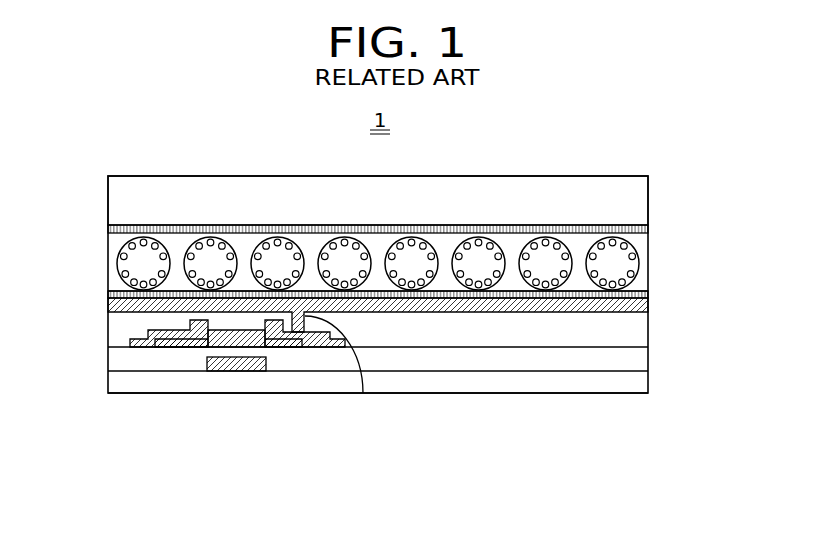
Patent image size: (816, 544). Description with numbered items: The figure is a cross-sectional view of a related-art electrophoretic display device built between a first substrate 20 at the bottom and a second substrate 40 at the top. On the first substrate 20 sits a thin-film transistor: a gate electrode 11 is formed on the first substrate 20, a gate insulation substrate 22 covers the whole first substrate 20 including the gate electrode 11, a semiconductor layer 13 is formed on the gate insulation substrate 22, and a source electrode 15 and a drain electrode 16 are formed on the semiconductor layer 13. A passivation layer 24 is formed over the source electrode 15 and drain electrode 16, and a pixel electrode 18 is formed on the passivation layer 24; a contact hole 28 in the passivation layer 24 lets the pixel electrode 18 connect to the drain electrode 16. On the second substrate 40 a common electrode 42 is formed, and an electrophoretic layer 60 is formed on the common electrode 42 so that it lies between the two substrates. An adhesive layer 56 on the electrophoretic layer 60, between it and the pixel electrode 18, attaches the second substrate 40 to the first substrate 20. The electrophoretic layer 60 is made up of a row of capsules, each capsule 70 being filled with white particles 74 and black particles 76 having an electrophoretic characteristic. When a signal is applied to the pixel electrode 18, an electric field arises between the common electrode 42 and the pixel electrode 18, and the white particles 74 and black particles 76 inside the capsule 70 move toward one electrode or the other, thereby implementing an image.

The gate electrode 11 is at (243, 364).
The semiconductor layer 13 is at (182, 342).
The source electrode 15 is at (138, 342).
The drain electrode 16 is at (302, 342).
The pixel electrode 18 is at (633, 306).
The first substrate 20 is at (633, 384).
The gate insulation substrate 22 is at (633, 359).
The passivation layer 24 is at (625, 334).
The contact hole 28 is at (363, 393).
The second substrate 40 is at (635, 193).
The common electrode 42 is at (630, 229).
The adhesive layer 56 is at (115, 294).
The electrophoretic layer 60 is at (427, 265).
The capsule 70 is at (622, 265).
The white particles 74 is at (625, 247).
The black particles 76 is at (625, 289).